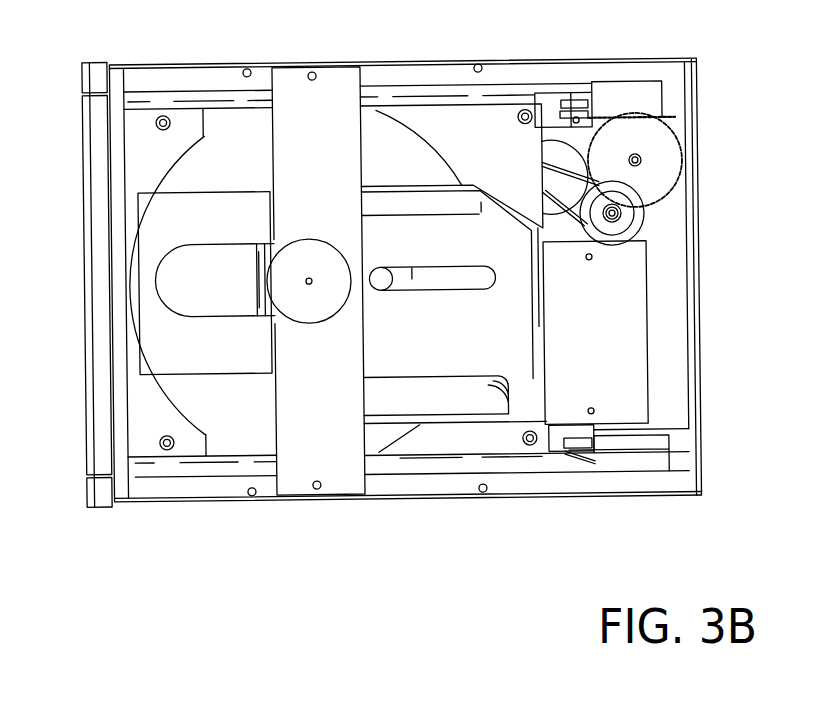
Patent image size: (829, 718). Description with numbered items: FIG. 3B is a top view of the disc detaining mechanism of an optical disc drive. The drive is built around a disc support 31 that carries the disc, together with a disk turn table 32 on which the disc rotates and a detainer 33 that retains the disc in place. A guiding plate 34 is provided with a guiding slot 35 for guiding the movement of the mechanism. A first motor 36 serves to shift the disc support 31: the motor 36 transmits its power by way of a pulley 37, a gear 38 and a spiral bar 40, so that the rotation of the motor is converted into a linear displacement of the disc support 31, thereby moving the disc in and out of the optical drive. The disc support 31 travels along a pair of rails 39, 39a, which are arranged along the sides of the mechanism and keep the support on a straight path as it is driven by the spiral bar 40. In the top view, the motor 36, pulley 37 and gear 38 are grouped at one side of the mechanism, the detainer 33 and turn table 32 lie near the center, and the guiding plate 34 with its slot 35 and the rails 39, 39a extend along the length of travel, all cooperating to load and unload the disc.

The disc support 31 is at (177, 393).
The disk turn table 32 is at (268, 316).
The detainer 33 is at (316, 240).
The guiding plate 34 is at (163, 338).
The guiding slot 35 is at (190, 276).
The first motor 36 is at (581, 126).
The pulley 37 is at (642, 232).
The gear 38 is at (678, 136).
The rail 39 is at (637, 98).
The rail 39a is at (641, 463).
The spiral bar 40 is at (637, 112).